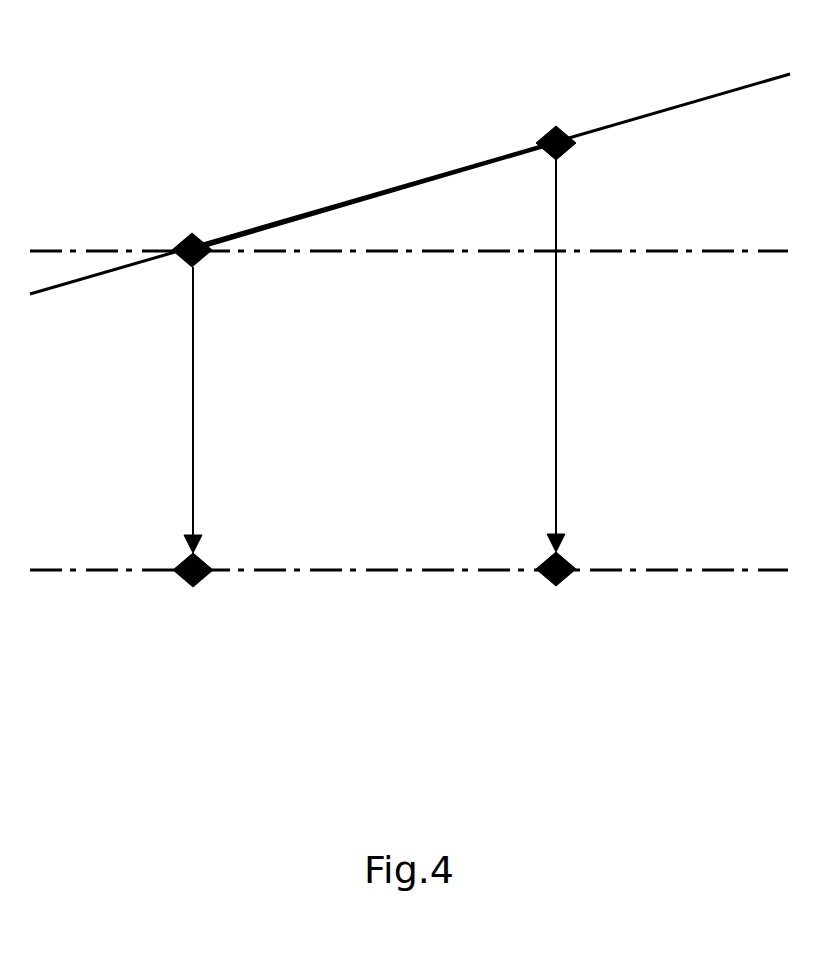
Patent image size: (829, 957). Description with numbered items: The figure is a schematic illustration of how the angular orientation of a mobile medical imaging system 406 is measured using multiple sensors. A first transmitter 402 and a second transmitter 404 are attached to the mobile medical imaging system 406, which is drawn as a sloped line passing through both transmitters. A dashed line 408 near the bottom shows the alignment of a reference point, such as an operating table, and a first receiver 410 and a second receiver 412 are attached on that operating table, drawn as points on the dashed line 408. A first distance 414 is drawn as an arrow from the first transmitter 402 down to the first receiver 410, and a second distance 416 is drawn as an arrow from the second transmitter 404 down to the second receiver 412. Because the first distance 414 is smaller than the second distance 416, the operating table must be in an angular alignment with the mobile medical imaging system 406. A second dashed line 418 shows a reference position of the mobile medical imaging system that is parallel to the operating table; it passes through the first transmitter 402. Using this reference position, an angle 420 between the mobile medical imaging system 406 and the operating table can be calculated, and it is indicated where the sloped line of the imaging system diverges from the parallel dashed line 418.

The first transmitter 402 is at (192, 234).
The second transmitter 404 is at (556, 126).
The mobile medical imaging system 406 is at (648, 118).
The dashed line 408 is at (665, 569).
The first receiver 410 is at (193, 587).
The second receiver 412 is at (556, 586).
The first distance 414 is at (193, 398).
The second distance 416 is at (555, 402).
The dashed line 418 is at (661, 252).
The angle 420 is at (330, 225).